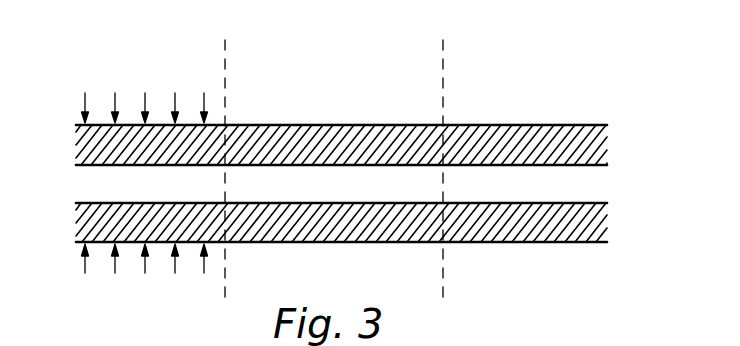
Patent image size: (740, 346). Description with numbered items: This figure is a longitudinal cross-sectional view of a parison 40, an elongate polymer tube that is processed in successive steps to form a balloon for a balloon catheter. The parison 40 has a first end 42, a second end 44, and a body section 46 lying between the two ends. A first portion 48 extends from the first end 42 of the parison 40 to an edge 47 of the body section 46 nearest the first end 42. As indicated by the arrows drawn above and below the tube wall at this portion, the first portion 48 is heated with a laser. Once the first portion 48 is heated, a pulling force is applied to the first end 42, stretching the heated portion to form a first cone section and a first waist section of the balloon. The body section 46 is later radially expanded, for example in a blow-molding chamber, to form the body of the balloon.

The parison 40 is at (548, 67).
The first end 42 is at (80, 140).
The second end 44 is at (602, 138).
The body section 46 is at (443, 66).
The edge of the body section 47 is at (224, 176).
The first portion 48 is at (225, 66).